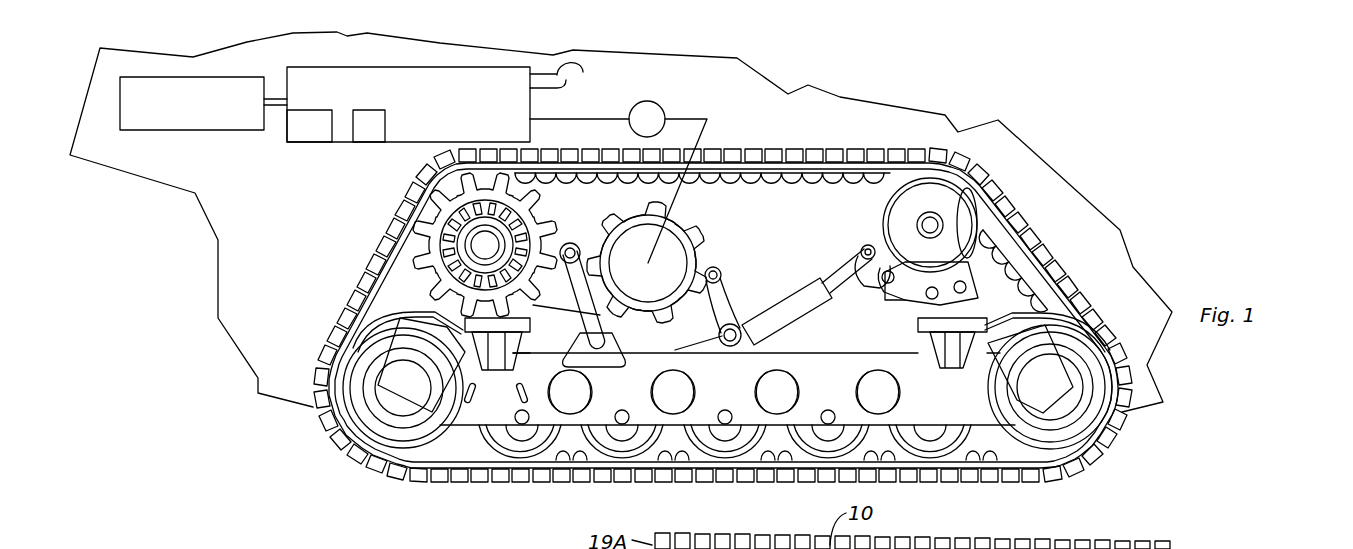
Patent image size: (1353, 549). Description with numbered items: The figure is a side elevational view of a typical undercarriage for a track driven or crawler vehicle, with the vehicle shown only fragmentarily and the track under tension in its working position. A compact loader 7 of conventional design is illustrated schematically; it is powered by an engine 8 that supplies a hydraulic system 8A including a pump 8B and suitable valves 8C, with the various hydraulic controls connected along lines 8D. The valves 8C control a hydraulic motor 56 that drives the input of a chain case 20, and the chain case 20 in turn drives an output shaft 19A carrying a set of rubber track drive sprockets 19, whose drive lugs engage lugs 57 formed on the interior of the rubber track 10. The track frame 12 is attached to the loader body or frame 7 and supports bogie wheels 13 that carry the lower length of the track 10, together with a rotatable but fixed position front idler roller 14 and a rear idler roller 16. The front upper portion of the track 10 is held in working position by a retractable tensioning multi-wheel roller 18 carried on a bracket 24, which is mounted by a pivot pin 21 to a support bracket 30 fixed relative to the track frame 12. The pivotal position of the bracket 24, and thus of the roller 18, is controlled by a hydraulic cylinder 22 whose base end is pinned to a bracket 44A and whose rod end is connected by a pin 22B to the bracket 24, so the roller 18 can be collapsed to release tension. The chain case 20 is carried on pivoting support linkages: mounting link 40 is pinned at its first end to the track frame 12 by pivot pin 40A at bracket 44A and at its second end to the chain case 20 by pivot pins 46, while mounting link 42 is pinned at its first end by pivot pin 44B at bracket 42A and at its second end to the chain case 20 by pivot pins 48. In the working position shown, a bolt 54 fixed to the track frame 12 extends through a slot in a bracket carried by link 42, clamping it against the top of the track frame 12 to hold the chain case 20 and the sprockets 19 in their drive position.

The compact loader 7 is at (248, 248).
The engine 8 is at (150, 130).
The hydraulic system 8A is at (288, 72).
The pump 8B is at (292, 128).
The valves 8C is at (372, 142).
The lines 8D is at (573, 73).
The track 10 is at (335, 292).
The track frame 12 is at (766, 368).
The bogie wheels 13 is at (585, 440).
The front idler roller 14 is at (1043, 425).
The rear idler roller 16 is at (362, 358).
The tensioning multi-wheel roller 18 is at (878, 226).
The rubber track drive sprockets 19 is at (410, 210).
The output shaft 19A is at (478, 247).
The chain case 20 is at (680, 222).
The pivot pin 21 is at (980, 196).
The hydraulic cylinder 22 is at (786, 290).
The pin 22B is at (858, 284).
The bracket 24 is at (930, 312).
The support bracket 30 is at (975, 312).
The mounting link 40 is at (736, 296).
The pivot pin 40A is at (795, 331).
The mounting link 42 is at (612, 249).
The bracket 42A is at (600, 367).
The bracket 44A is at (703, 347).
The pivot pin 44B is at (638, 290).
The pivot pins 46 is at (716, 264).
The pivot pins 48 is at (569, 243).
The bolt 54 is at (538, 342).
The hydraulic motor 56 is at (663, 103).
The lugs 57 is at (770, 196).